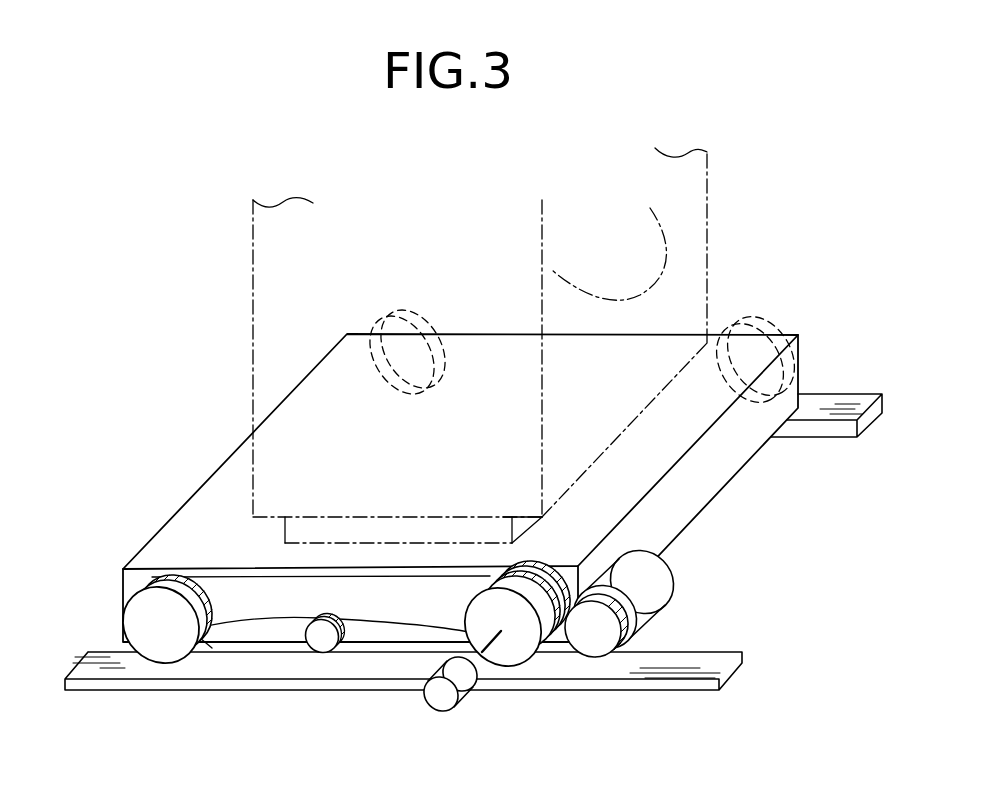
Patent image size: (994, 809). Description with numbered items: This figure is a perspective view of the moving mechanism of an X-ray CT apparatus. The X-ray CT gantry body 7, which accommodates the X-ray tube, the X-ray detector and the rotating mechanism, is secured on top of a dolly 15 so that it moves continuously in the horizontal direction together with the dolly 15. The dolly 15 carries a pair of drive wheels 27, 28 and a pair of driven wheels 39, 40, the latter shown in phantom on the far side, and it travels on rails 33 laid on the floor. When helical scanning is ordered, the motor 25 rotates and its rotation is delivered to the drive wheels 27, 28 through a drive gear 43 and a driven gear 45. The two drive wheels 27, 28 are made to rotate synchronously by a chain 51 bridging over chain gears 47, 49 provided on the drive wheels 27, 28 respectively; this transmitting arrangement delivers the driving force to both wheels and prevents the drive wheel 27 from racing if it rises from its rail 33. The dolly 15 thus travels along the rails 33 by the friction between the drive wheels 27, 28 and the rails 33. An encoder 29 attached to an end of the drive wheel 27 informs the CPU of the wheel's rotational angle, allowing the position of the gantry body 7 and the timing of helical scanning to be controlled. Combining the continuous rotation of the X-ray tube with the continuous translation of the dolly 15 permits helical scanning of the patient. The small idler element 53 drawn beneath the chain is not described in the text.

The X-ray CT gantry body 7 is at (270, 460).
The dolly 15 is at (195, 517).
The motor 25 is at (660, 565).
The drive wheel 27 is at (503, 655).
The drive wheel 28 is at (128, 612).
The encoder 29 is at (437, 700).
The rail 33 is at (850, 393).
The driven wheel 39 is at (747, 318).
The driven wheel 40 is at (411, 318).
The drive gear 43 is at (610, 648).
The driven gear 45 is at (566, 645).
The chain gear 47 is at (543, 652).
The chain gear 49 is at (210, 650).
The chain 51 is at (260, 628).
The idler roller 53 is at (321, 645).